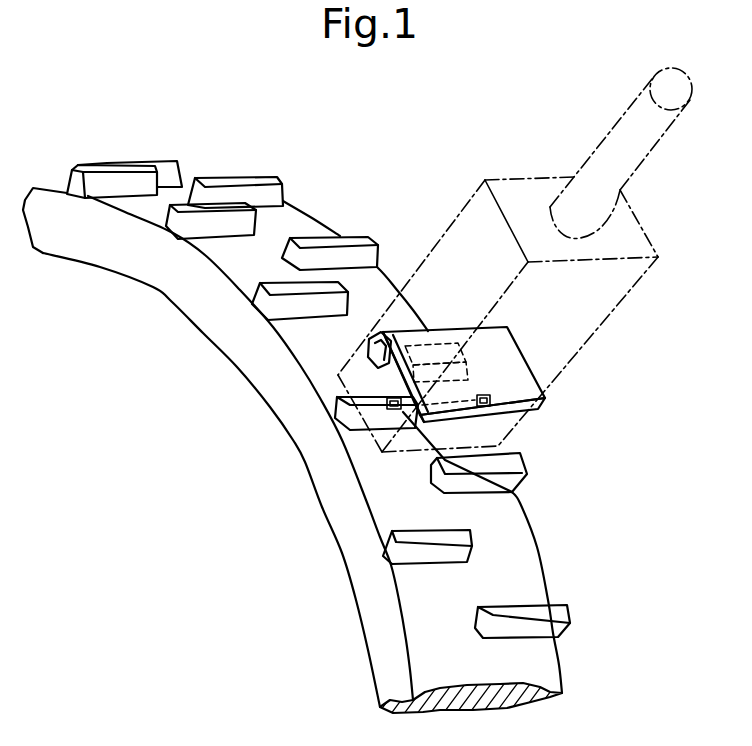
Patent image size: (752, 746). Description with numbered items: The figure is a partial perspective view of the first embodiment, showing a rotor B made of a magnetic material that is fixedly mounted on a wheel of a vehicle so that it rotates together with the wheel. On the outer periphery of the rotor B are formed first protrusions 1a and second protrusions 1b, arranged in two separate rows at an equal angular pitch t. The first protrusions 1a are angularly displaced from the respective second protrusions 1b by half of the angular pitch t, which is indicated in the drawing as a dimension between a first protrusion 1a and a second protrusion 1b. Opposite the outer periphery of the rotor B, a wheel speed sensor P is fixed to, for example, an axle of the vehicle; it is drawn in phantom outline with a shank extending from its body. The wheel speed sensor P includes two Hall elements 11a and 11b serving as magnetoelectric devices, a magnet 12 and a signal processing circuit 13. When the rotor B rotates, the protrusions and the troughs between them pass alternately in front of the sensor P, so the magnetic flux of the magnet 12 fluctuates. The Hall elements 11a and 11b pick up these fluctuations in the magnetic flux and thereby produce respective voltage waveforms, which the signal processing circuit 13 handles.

The first protrusions 1a is at (121, 180).
The second protrusions 1b is at (263, 180).
The Hall element 11a is at (515, 491).
The Hall element 11b is at (460, 418).
The magnet 12 is at (518, 378).
The signal processing circuit 13 is at (470, 386).
The wheel speed sensor P is at (577, 317).
The rotor B is at (152, 292).
The angular pitch t is at (227, 183).